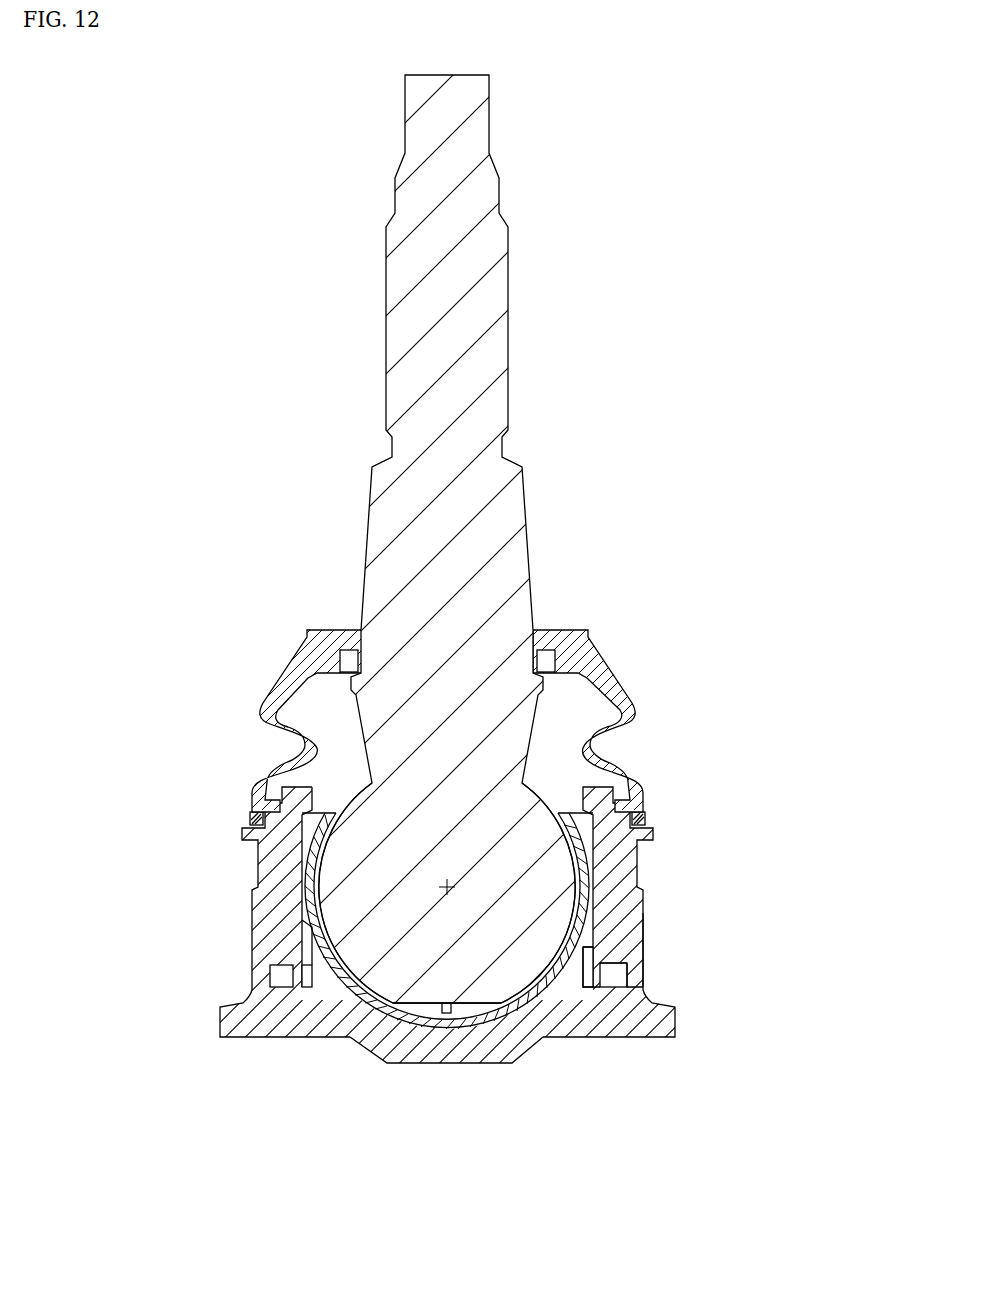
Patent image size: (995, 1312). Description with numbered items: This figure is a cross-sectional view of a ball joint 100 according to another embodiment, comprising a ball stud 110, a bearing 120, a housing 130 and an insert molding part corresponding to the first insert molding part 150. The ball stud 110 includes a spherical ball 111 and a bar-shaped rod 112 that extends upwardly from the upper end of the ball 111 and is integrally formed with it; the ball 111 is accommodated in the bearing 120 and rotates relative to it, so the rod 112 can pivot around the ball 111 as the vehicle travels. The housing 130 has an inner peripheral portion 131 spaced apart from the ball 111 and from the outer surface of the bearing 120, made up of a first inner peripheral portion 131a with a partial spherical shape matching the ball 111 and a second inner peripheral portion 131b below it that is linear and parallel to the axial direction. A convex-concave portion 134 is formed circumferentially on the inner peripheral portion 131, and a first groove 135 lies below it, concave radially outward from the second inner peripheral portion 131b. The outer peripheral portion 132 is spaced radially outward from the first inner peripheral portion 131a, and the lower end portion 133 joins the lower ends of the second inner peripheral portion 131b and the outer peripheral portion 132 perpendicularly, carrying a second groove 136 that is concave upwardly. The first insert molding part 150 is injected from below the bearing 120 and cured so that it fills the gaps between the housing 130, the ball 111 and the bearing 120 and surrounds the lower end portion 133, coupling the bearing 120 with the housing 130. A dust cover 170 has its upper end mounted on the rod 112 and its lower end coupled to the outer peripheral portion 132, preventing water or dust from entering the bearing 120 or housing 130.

The ball joint 100 is at (745, 150).
The ball stud 110 is at (563, 412).
The ball 111 is at (543, 877).
The rod 112 is at (488, 299).
The bearing 120 is at (350, 1032).
The housing 130 is at (613, 903).
The inner peripheral portion 131 is at (565, 1165).
The first inner peripheral portion 131a is at (580, 934).
The second inner peripheral portion 131b is at (574, 970).
The outer peripheral portion 132 is at (662, 957).
The lower end portion 133 is at (643, 1007).
The convex-concave portion 134 is at (580, 910).
The first groove 135 is at (579, 985).
The second groove 136 is at (617, 995).
The first insert molding part 150 is at (292, 1023).
The dust cover 170 is at (607, 677).